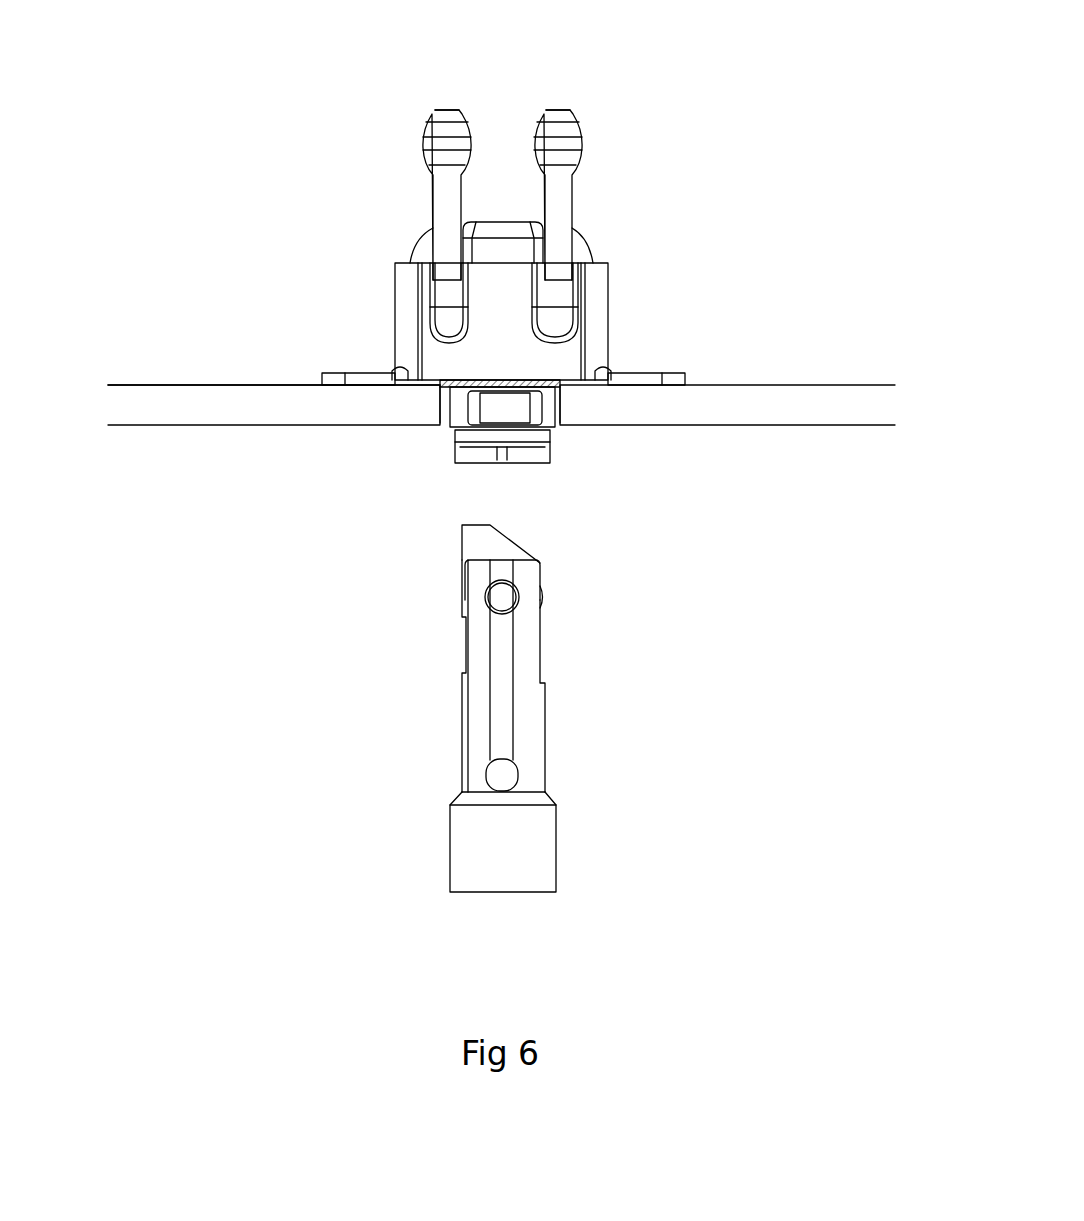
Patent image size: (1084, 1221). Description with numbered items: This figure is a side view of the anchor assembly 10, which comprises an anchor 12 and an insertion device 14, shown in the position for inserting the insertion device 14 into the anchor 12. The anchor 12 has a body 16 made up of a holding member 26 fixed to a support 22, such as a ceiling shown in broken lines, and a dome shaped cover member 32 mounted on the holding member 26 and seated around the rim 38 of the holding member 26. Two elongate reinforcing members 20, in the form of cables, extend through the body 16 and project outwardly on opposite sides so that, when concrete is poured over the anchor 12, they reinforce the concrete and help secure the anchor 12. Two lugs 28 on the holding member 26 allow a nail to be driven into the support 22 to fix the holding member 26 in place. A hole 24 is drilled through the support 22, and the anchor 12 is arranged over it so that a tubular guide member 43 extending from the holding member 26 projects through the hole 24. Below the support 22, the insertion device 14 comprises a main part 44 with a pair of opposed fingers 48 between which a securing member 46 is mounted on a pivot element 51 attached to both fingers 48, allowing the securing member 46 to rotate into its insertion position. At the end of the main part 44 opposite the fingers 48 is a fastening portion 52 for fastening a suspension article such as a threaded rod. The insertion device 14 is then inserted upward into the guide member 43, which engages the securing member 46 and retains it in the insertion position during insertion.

The anchor assembly 10 is at (327, 640).
The anchor 12 is at (393, 235).
The insertion device 14 is at (563, 740).
The body 16 is at (593, 243).
The reinforcing members 20 is at (445, 132).
The support 22 is at (218, 405).
The hole 24 is at (442, 410).
The holding member 26 is at (597, 327).
The lugs 28 is at (330, 373).
The cover member 32 is at (490, 238).
The rim 38 is at (393, 372).
The guide member 43 is at (540, 435).
The main part 44 is at (470, 728).
The securing member 46 is at (485, 533).
The fingers 48 is at (528, 575).
The pivot element 51 is at (502, 597).
The fastening portion 52 is at (477, 840).